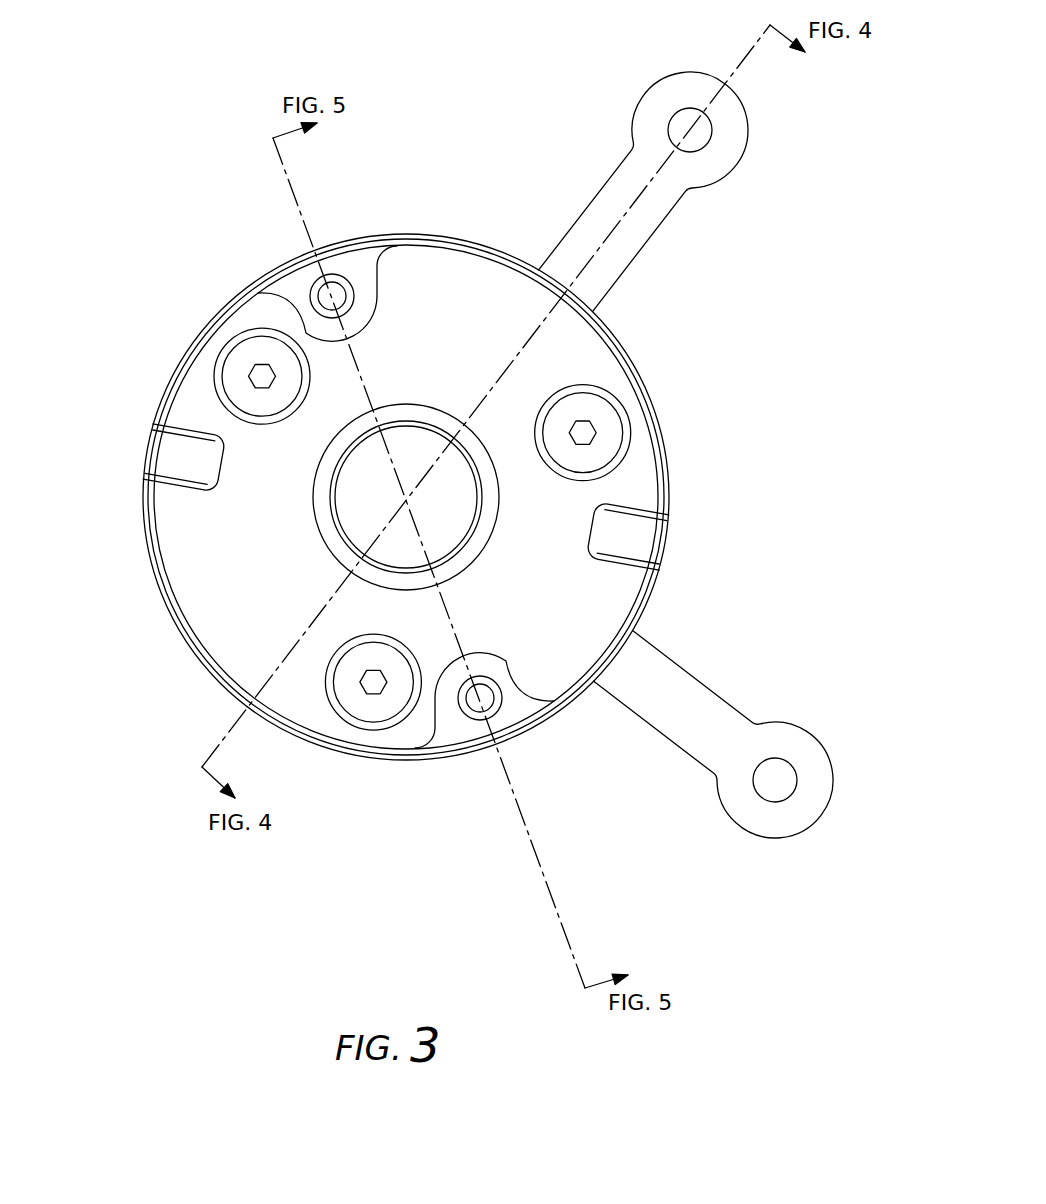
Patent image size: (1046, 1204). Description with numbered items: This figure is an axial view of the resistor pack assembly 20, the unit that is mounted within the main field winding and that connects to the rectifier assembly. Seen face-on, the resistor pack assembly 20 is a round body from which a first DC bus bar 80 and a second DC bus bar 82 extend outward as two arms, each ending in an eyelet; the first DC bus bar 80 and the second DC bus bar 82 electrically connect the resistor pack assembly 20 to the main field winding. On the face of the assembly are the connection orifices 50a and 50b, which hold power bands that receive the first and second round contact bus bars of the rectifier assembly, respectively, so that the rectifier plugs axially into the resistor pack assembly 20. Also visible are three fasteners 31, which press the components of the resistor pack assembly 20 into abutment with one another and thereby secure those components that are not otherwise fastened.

The resistor pack assembly 20 is at (134, 207).
The fasteners 31 is at (597, 433).
The connection orifice 50a is at (337, 291).
The connection orifice 50b is at (482, 699).
The first DC bus bar 80 is at (715, 165).
The second DC bus bar 82 is at (750, 817).